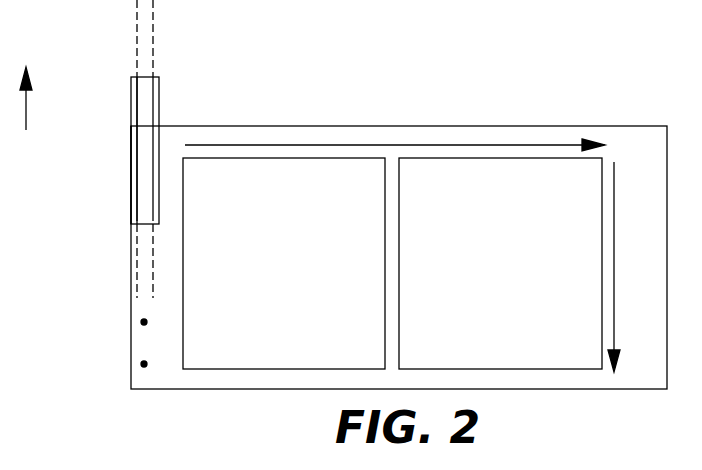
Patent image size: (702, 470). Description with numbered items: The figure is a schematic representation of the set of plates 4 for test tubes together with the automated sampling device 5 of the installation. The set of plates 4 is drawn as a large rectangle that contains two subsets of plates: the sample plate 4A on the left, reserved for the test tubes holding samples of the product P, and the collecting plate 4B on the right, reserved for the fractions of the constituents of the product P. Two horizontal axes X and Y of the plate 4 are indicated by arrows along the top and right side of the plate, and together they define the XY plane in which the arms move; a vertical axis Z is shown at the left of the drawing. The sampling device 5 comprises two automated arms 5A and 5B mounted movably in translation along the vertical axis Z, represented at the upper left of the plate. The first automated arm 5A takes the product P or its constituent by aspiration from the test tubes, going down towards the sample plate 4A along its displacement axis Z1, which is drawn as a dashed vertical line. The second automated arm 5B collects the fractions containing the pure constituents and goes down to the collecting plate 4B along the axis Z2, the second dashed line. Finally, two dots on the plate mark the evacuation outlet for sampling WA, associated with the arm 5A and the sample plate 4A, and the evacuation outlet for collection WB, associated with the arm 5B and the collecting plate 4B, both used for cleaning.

The set of plates 4 is at (558, 127).
The sample plate 4A is at (284, 263).
The collecting plate 4B is at (500, 263).
The automated sampling device 5 is at (177, 58).
The first automated arm 5A is at (130, 150).
The second automated arm 5B is at (159, 107).
The displacement axis of first automated arm Z1 is at (136, 22).
The displacement axis of second automated arm Z2 is at (154, 21).
The evacuation outlet for sampling WA is at (141, 321).
The evacuation outlet for collection WB is at (141, 365).
The horizontal axis X is at (395, 128).
The horizontal axis Y is at (632, 267).
The vertical axis Z is at (26, 86).